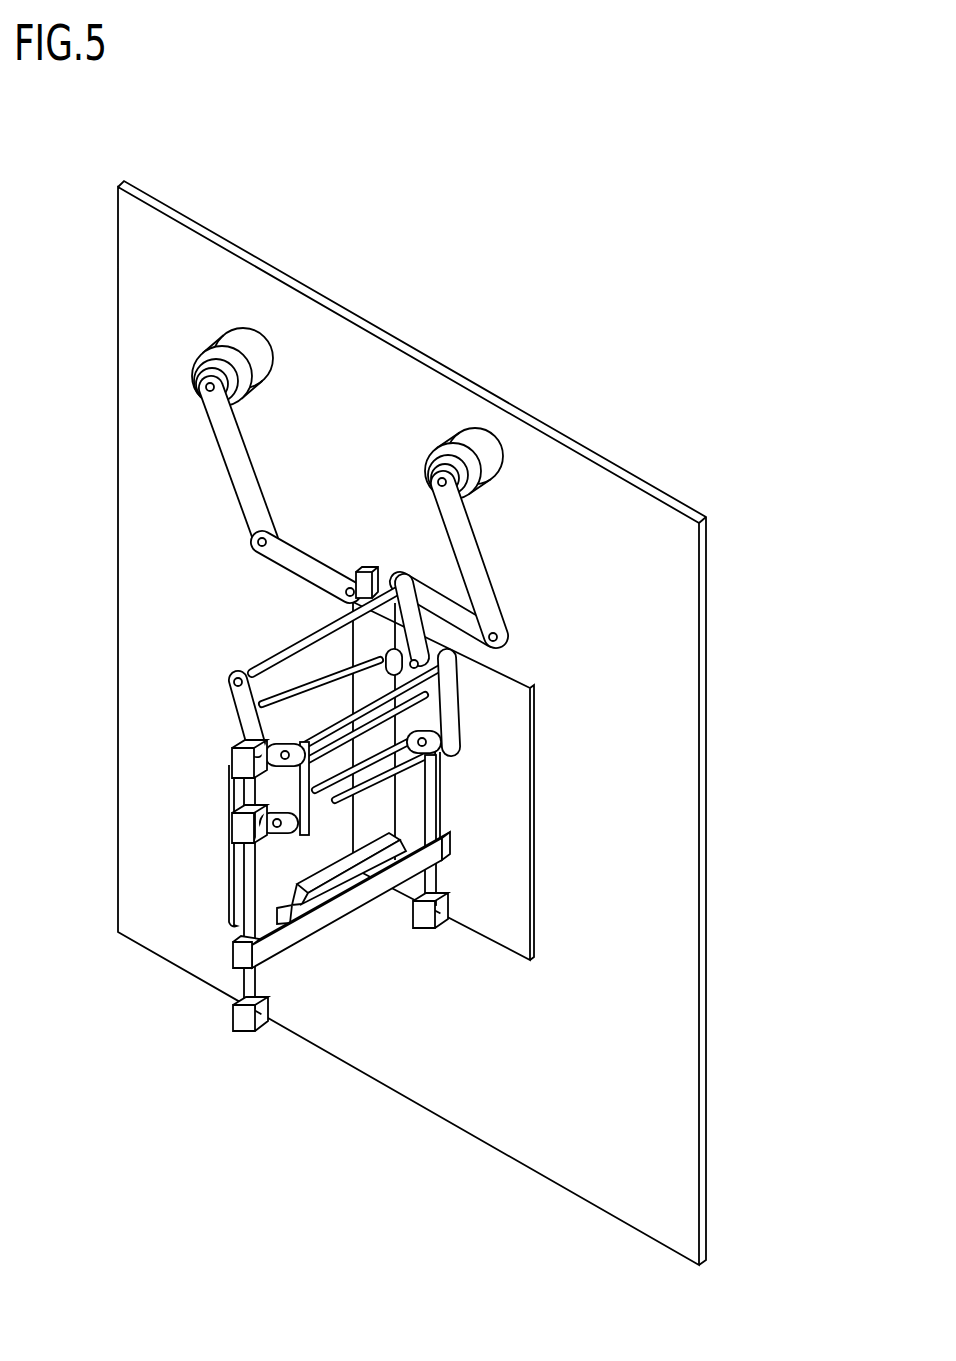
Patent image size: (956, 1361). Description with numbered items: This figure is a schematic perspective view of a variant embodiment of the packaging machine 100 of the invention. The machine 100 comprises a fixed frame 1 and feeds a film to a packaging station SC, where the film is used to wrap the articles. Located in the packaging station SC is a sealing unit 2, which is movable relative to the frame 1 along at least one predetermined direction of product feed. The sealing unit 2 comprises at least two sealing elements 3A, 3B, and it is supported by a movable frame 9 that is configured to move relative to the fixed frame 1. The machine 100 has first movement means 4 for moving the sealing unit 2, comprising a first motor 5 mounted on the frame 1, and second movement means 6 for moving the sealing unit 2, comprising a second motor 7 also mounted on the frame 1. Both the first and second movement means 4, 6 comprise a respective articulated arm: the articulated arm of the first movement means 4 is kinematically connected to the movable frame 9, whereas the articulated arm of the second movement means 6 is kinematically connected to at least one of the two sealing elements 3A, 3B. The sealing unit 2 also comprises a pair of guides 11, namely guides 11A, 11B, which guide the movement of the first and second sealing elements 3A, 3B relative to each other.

The frame 1 is at (412, 723).
The packaging station SC is at (566, 990).
The movable frame 9 is at (541, 752).
The packaging machine 100 is at (310, 602).
The sealing unit 2 is at (248, 747).
The sealing element 3A is at (335, 817).
The sealing element 3B is at (300, 873).
The first movement means 4 is at (319, 547).
The first motor 5 is at (258, 330).
The second movement means 6 is at (450, 583).
The second motor 7 is at (494, 440).
The guides 11 is at (280, 889).
The guide 11A is at (240, 978).
The guide 11B is at (443, 882).